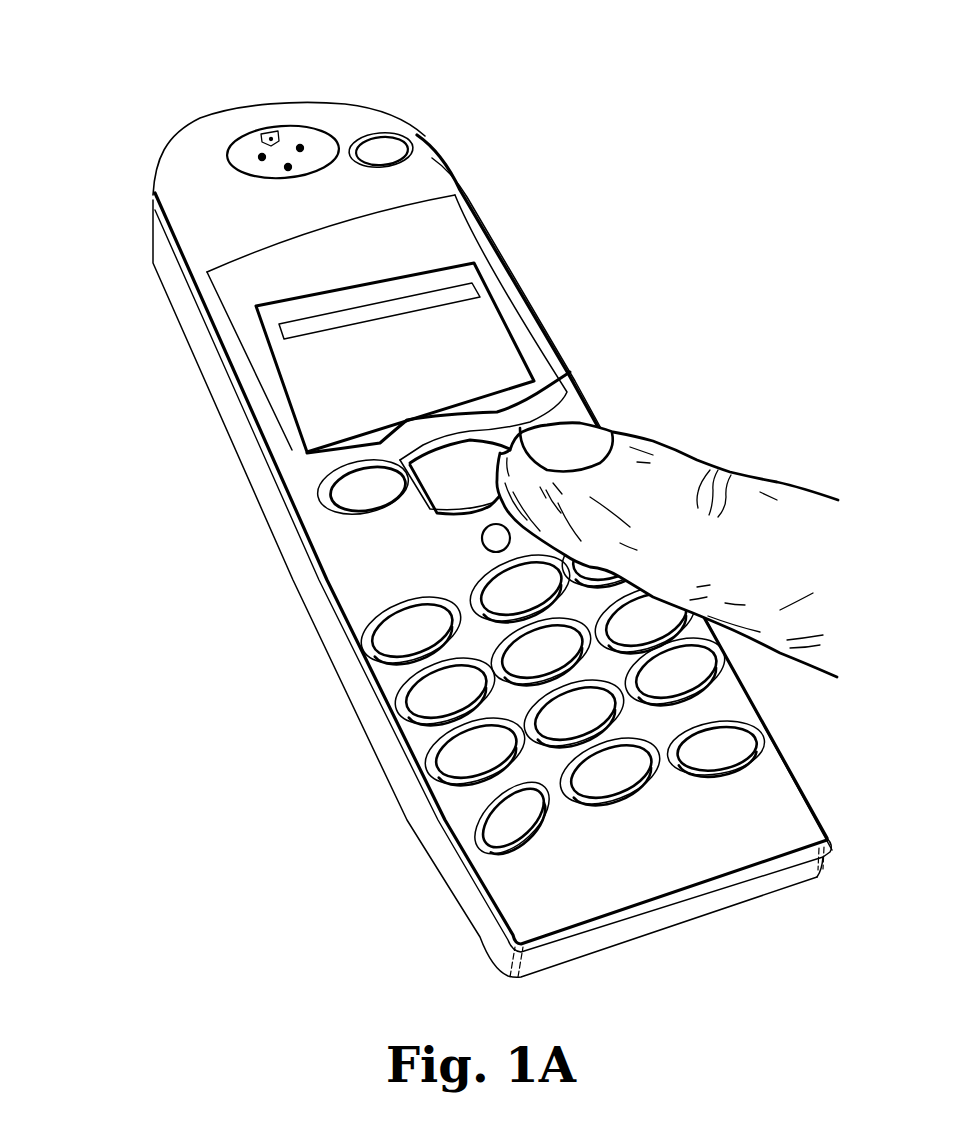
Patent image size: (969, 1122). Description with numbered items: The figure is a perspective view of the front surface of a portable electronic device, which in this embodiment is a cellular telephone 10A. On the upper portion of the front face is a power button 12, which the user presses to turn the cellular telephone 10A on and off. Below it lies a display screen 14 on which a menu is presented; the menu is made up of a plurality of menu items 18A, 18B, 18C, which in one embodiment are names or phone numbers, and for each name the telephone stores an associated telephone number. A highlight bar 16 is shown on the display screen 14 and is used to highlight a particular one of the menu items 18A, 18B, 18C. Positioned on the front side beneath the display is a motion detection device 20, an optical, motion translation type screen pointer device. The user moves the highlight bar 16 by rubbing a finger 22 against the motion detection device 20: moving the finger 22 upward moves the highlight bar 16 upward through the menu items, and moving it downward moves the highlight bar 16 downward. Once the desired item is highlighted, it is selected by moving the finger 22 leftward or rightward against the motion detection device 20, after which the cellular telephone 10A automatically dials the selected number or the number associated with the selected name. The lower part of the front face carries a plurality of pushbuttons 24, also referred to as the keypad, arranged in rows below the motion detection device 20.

The cellular telephone 10A is at (234, 69).
The power button 12 is at (397, 146).
The display screen 14 is at (275, 322).
The highlight bar 16 is at (301, 354).
The menu item 18A is at (311, 383).
The menu item 18B is at (326, 407).
The menu item 18C is at (327, 428).
The motion detection device 20 is at (485, 540).
The finger 22 is at (657, 465).
The pushbuttons 24 is at (507, 820).